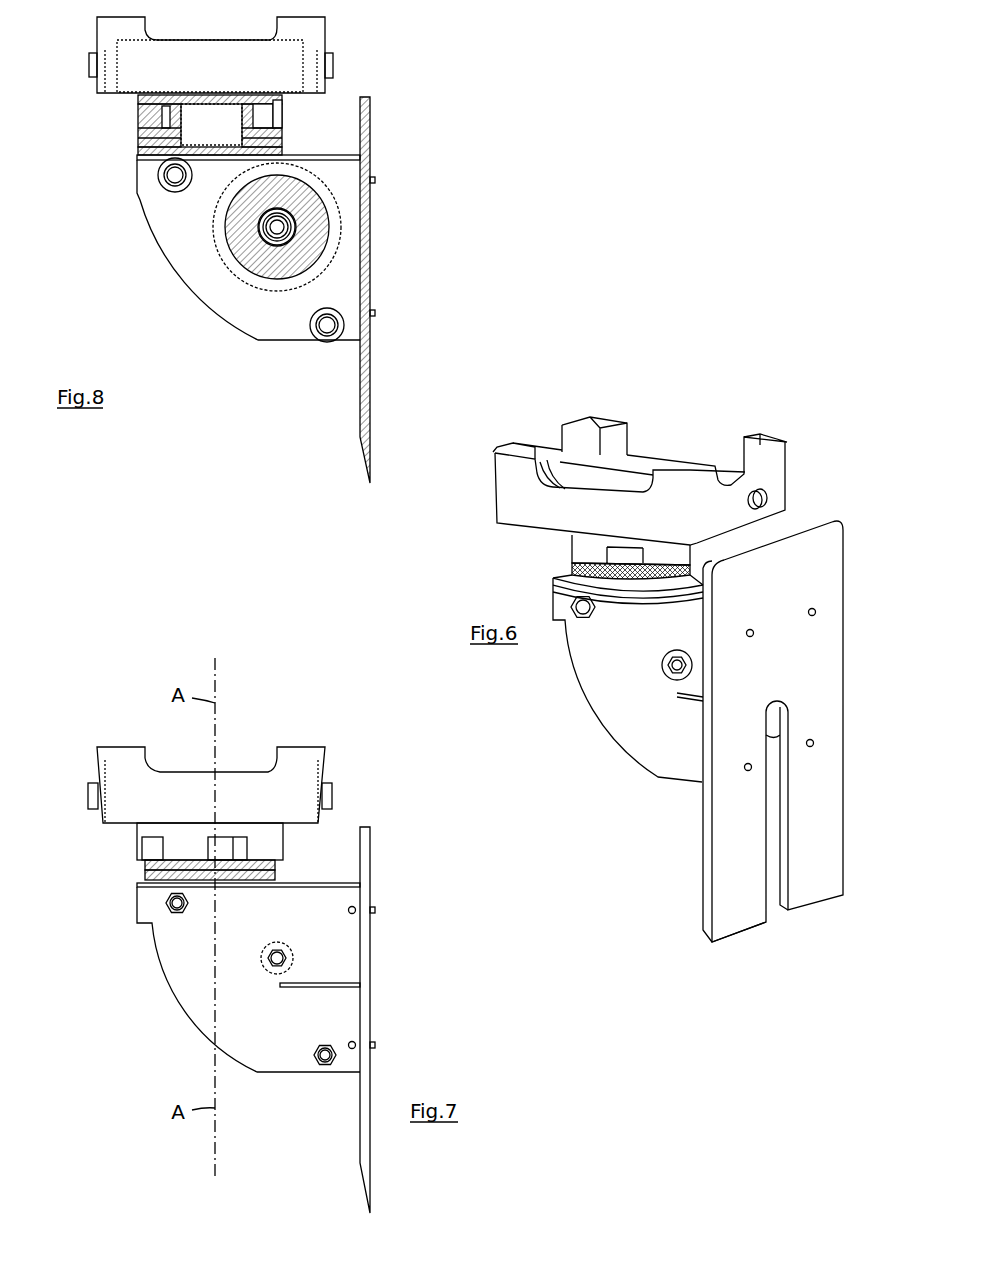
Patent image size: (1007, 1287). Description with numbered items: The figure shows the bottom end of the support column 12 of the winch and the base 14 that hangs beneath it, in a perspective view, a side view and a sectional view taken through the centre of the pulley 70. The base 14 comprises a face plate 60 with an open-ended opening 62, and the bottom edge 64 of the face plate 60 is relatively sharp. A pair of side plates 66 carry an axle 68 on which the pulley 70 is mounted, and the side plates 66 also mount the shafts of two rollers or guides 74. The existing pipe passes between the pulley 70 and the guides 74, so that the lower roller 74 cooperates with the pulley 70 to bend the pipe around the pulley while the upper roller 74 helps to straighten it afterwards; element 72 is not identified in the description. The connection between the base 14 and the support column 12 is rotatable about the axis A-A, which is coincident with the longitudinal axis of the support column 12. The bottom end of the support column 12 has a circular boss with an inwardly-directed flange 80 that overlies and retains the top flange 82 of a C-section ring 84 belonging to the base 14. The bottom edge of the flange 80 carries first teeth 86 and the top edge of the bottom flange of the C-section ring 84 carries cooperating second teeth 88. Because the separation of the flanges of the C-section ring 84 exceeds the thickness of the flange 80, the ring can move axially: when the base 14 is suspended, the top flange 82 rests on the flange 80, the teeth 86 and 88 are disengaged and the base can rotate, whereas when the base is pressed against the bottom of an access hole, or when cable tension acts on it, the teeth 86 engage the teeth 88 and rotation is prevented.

In FIG. 8, the support column 12 is at (325, 30).
In FIG. 7, the support column 12 is at (210, 785).
In FIG. 6, the support column 12 is at (640, 481).
In FIG. 8, the base 14 is at (173, 324).
In FIG. 6, the base 14 is at (552, 672).
In FIG. 8, the face plate 60 is at (368, 127).
In FIG. 7, the face plate 60 is at (362, 1020).
In FIG. 6, the face plate 60 is at (820, 572).
In FIG. 6, the open-ended opening 62 is at (775, 873).
In FIG. 6, the bottom edge 64 is at (747, 930).
In FIG. 8, the side plates 66 is at (190, 253).
In FIG. 7, the side plates 66 is at (203, 977).
In FIG. 6, the side plates 66 is at (648, 727).
In FIG. 8, the axle 68 is at (288, 223).
In FIG. 7, the axle 68 is at (277, 958).
In FIG. 8, the pulley 70 is at (327, 235).
In FIG. 8, the fastener pin 72 is at (368, 270).
In FIG. 8, the rollers or guides 74 is at (163, 182).
In FIG. 7, the rollers or guides 74 is at (251, 979).
In FIG. 6, the rollers or guides 74 is at (631, 638).
In FIG. 8, the inwardly-directed flange 80 is at (150, 113).
In FIG. 7, the inwardly-directed flange 80 is at (210, 841).
In FIG. 6, the inwardly-directed flange 80 is at (583, 548).
In FIG. 8, the top flange 82 is at (160, 97).
In FIG. 8, the C-section ring 84 is at (175, 120).
In FIG. 8, the first teeth 86 is at (150, 132).
In FIG. 7, the first teeth 86 is at (210, 865).
In FIG. 6, the first teeth 86 is at (647, 570).
In FIG. 8, the second teeth 88 is at (150, 140).
In FIG. 7, the second teeth 88 is at (210, 875).
In FIG. 6, the second teeth 88 is at (647, 580).